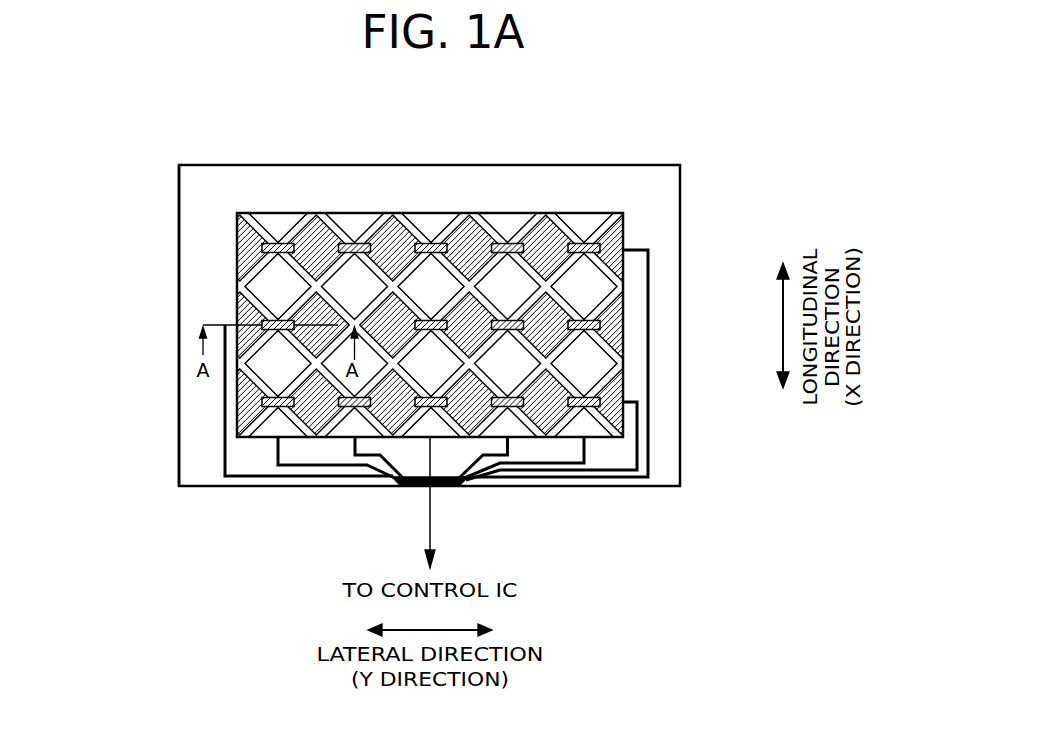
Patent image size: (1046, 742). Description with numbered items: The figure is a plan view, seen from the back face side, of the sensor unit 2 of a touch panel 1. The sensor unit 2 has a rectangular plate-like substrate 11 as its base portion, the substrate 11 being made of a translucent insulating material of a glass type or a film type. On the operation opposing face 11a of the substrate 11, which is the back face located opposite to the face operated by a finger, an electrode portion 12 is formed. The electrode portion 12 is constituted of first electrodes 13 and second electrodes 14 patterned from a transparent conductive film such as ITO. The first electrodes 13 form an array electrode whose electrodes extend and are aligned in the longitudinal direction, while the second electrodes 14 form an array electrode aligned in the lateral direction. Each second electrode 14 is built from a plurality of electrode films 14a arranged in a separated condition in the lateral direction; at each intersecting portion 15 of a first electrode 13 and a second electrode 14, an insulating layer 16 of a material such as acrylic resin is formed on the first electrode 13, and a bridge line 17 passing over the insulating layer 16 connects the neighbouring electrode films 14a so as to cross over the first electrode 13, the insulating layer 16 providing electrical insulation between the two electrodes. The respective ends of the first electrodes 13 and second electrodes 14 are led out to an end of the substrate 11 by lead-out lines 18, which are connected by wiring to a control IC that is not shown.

The touch panel 1 is at (703, 154).
The sensor unit 2 is at (262, 204).
The substrate 11 is at (178, 237).
The operation opposing face 11a is at (205, 278).
The electrode portion 12 is at (367, 100).
The first electrodes 13 is at (354, 215).
The second electrodes 14 is at (316, 215).
The electrode films 14a is at (549, 215).
The intersecting portion 15 is at (452, 215).
The insulating layer 16 is at (488, 215).
The bridge line 17 is at (431, 215).
The lead-out lines 18 is at (225, 412).